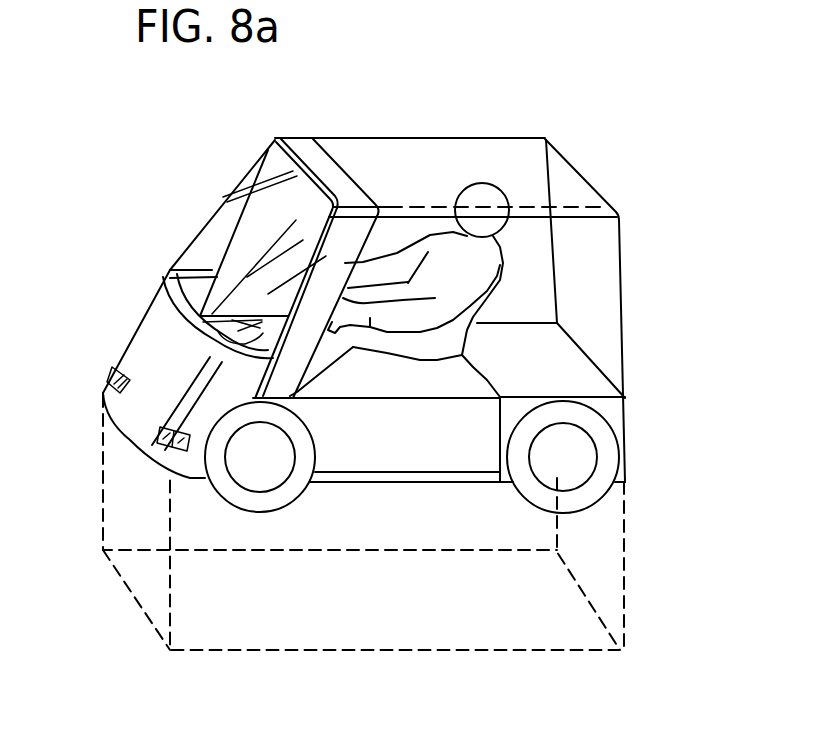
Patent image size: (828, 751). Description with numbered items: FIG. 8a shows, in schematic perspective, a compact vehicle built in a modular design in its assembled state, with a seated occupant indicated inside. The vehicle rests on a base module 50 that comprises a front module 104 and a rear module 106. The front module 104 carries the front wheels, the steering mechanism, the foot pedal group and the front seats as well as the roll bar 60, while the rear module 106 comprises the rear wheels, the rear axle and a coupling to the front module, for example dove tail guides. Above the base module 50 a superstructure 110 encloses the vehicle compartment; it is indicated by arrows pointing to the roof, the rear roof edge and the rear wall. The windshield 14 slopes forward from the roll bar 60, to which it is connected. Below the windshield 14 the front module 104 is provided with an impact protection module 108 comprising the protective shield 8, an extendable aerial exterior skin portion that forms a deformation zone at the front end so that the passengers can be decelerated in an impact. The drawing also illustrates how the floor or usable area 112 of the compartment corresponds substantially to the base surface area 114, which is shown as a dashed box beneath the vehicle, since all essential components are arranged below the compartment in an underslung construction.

The protective shield 8 is at (132, 408).
The windshield 14 is at (200, 227).
The base module 50 is at (396, 448).
The roll bar 60 is at (317, 157).
The front module 104 is at (432, 457).
The rear module 106 is at (620, 413).
The impact protection module 108 is at (136, 330).
The superstructure 110 is at (490, 128).
The floor or usable area 112 is at (450, 382).
The base surface area 114 is at (391, 617).